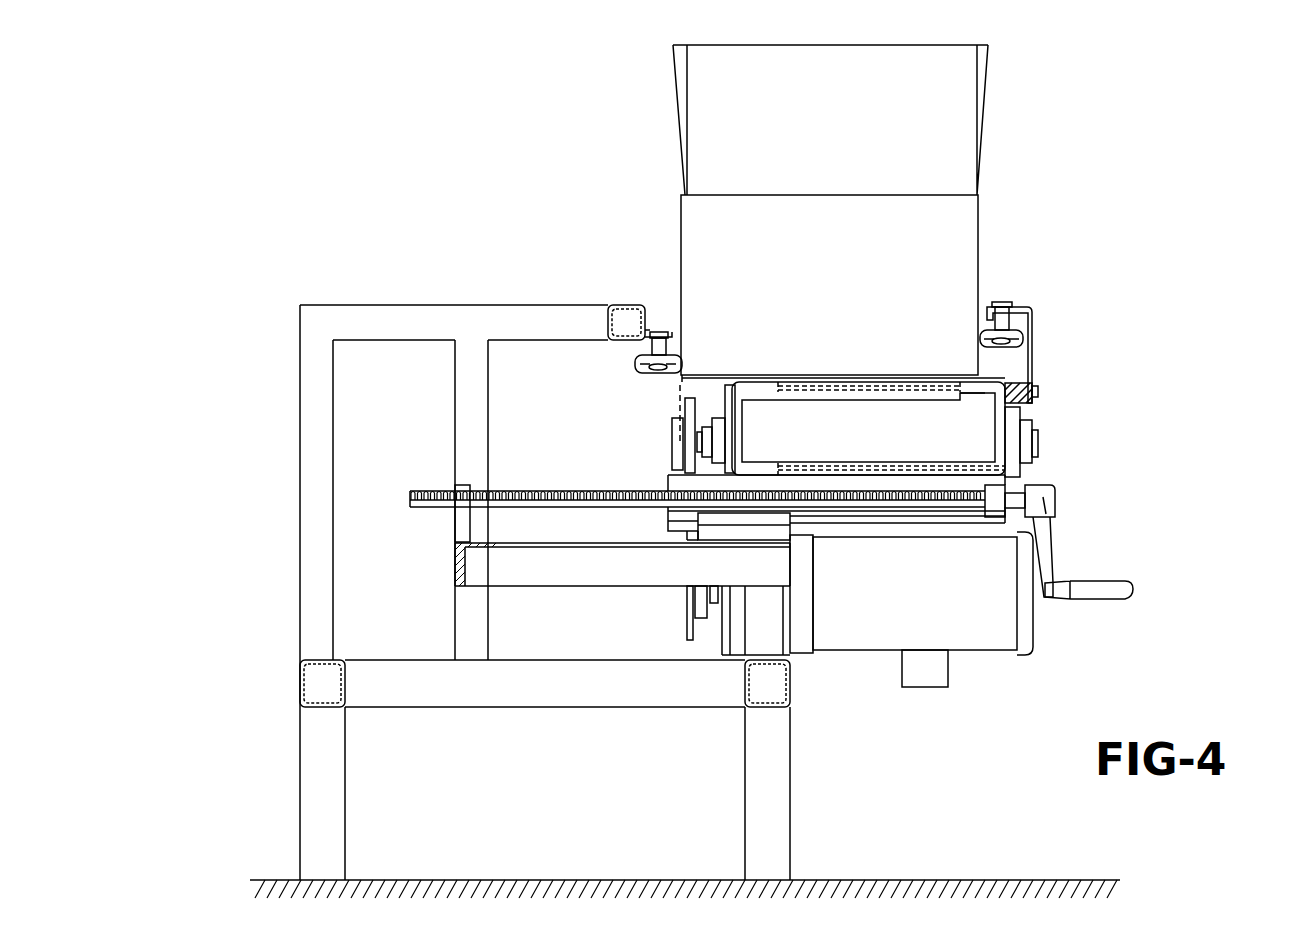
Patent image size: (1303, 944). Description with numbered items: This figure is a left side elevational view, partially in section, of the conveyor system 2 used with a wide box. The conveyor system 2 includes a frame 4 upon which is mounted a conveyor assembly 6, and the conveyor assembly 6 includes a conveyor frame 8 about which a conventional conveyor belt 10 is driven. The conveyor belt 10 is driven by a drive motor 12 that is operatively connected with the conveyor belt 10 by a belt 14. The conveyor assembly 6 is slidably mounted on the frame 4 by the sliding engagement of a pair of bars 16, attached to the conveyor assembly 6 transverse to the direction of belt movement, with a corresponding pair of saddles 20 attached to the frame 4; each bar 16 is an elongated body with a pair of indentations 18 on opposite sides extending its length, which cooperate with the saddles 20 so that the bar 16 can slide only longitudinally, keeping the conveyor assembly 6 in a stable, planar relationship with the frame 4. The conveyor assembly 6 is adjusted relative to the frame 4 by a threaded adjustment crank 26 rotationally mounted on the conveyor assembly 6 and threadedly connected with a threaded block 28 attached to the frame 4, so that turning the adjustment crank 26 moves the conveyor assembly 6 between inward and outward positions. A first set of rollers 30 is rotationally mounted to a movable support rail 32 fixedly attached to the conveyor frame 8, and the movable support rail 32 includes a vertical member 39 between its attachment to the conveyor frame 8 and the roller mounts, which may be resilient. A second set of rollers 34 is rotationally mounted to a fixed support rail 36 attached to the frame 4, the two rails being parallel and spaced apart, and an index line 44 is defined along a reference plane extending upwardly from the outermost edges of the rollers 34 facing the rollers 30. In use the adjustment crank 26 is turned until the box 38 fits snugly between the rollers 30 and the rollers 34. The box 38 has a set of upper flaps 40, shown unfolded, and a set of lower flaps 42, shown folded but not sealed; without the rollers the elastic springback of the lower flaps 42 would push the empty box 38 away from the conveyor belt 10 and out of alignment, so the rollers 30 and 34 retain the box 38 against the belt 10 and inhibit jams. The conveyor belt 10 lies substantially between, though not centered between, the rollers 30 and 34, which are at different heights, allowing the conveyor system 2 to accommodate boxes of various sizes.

The conveyor system 2 is at (283, 205).
The frame 4 is at (295, 530).
The conveyor assembly 6 is at (1023, 293).
The conveyor frame 8 is at (990, 385).
The conveyor belt 10 is at (855, 377).
The drive motor 12 is at (975, 635).
The belt 14 is at (690, 630).
The bars 16 is at (912, 528).
The indentations 18 is at (955, 519).
The saddles 20 is at (760, 530).
The threaded adjustment crank 26 is at (600, 491).
The threaded block 28 is at (462, 517).
The first set of rollers 30 is at (985, 333).
The movable support rail 32 is at (1043, 316).
The second set of rollers 34 is at (682, 362).
The fixed support rail 36 is at (640, 341).
The box 38 is at (962, 222).
The vertical member 39 is at (1033, 371).
The upper flaps 40 is at (715, 112).
The lower flaps 42 is at (795, 379).
The index line 44 is at (680, 395).